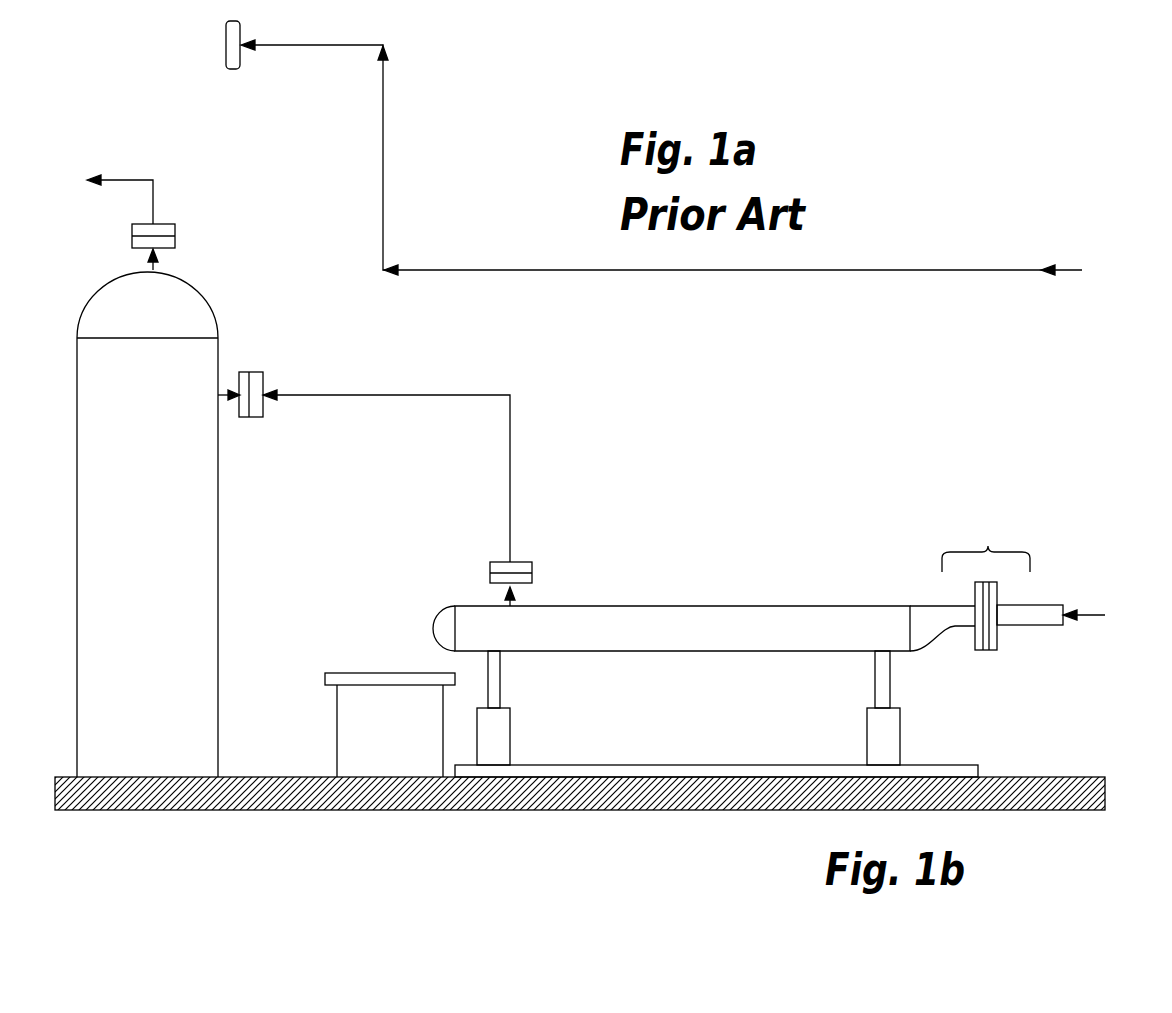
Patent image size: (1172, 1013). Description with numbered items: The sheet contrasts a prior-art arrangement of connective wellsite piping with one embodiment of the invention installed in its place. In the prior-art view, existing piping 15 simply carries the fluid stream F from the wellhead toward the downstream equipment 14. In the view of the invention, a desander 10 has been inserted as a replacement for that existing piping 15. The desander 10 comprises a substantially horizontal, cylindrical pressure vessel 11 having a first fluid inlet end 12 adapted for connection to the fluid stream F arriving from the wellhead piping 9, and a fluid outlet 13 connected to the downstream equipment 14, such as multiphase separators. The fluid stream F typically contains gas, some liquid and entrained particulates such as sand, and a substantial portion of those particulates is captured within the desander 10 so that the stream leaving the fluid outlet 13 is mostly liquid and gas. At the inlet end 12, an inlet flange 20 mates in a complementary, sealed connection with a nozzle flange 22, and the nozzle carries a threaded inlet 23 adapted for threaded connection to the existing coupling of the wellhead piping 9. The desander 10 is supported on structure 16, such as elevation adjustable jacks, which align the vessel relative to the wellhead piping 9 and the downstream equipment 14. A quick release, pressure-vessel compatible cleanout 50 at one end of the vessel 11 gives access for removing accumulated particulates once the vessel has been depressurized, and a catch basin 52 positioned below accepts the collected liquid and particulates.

In FIG. 1A, the existing piping 15 is at (384, 178).
In FIG. 1A, the fluid stream F is at (1062, 268).
In FIG. 1B, the fluid stream F is at (1082, 620).
In FIG. 1B, the downstream equipment 14 is at (152, 528).
In FIG. 1B, the fluid outlet 13 is at (532, 580).
In FIG. 1B, the pressure vessel 11 is at (683, 600).
In FIG. 1B, the cleanout 50 is at (443, 626).
In FIG. 1B, the desander 10 is at (866, 508).
In FIG. 1B, the fluid inlet end 12 is at (988, 546).
In FIG. 1B, the inlet flange 20 is at (983, 650).
In FIG. 1B, the nozzle flange 22 is at (990, 650).
In FIG. 1B, the threaded inlet 23 is at (1050, 605).
In FIG. 1B, the wellhead piping 9 is at (1098, 612).
In FIG. 1B, the support structure 16 is at (495, 728).
In FIG. 1B, the catch basin 52 is at (370, 750).